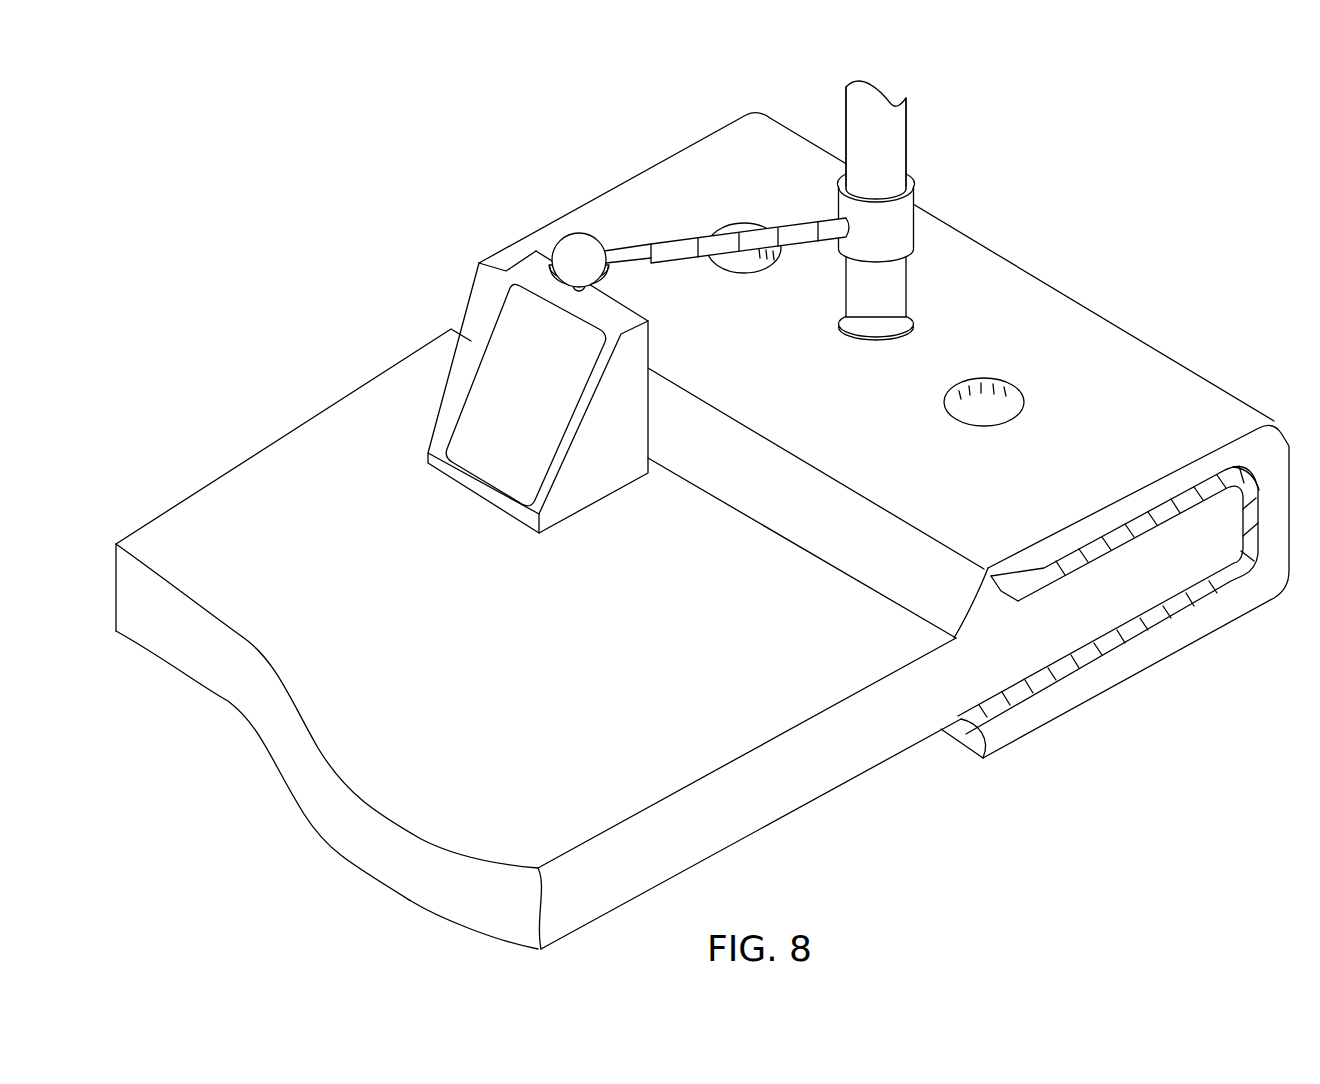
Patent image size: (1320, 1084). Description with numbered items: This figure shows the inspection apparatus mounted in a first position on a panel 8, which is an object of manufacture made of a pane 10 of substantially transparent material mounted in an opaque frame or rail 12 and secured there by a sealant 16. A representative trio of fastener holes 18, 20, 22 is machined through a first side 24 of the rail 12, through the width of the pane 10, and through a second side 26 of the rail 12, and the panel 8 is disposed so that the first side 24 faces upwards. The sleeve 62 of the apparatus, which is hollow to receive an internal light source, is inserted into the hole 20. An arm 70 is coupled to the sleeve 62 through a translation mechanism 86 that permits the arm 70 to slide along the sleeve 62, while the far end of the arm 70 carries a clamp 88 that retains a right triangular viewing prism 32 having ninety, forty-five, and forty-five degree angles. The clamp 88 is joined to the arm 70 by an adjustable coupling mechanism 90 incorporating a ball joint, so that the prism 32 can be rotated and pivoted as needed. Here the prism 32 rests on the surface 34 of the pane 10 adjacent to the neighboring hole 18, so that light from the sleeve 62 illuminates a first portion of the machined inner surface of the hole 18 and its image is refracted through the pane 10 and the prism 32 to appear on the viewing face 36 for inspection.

The panel 8 is at (373, 160).
The pane 10 is at (322, 406).
The rail 12 is at (1140, 328).
The sealant 16 is at (1085, 661).
The hole 18 is at (743, 273).
The hole 20 is at (838, 339).
The hole 22 is at (975, 408).
The first side 24 is at (1172, 381).
The second side 26 is at (1155, 649).
The viewing prism 32 is at (470, 376).
The surface 34 is at (372, 406).
The viewing face 36 is at (507, 331).
The sleeve 62 is at (913, 109).
The arm 70 is at (668, 238).
The translation mechanism 86 is at (930, 186).
The clamp 88 is at (605, 498).
The coupling mechanism 90 is at (587, 230).